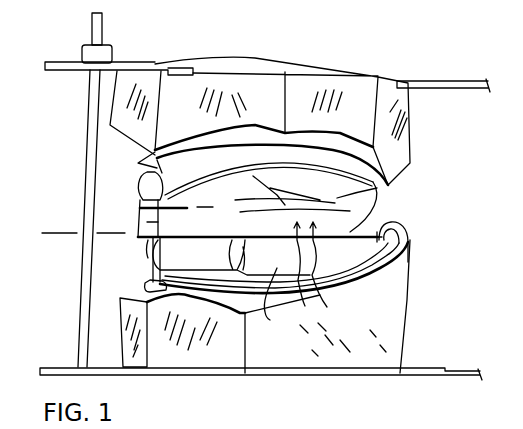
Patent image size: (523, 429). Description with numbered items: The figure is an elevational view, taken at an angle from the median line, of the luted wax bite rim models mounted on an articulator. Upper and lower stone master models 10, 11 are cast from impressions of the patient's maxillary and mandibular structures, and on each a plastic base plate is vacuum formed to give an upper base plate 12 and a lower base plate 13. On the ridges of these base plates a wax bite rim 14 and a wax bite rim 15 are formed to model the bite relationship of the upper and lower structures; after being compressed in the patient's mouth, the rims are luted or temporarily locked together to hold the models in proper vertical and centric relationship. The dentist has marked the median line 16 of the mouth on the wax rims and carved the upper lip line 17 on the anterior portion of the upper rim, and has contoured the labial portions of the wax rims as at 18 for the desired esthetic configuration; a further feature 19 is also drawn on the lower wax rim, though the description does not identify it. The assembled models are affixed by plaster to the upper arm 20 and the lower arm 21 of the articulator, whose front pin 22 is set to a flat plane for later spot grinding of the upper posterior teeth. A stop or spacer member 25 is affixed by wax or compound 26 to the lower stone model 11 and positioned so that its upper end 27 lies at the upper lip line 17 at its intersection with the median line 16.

The upper stone master model 10 is at (405, 130).
The lower stone master model 11 is at (388, 350).
The upper base plate 12 is at (392, 190).
The lower base plate 13 is at (408, 262).
The upper wax bite rim 14 is at (347, 225).
The lower wax bite rim 15 is at (283, 303).
The median line 16 is at (137, 186).
The upper lip line 17 is at (147, 248).
The labial portions of the wax rims 18 is at (147, 222).
The ribs 19 is at (327, 307).
The upper arm of the articulator 20 is at (438, 83).
The lower arm of the articulator 21 is at (418, 378).
The front pin 22 is at (77, 318).
The stop or spacer member 25 is at (148, 280).
The wax or compound 26 is at (150, 292).
The upper end of the stop or spacer member 27 is at (156, 236).